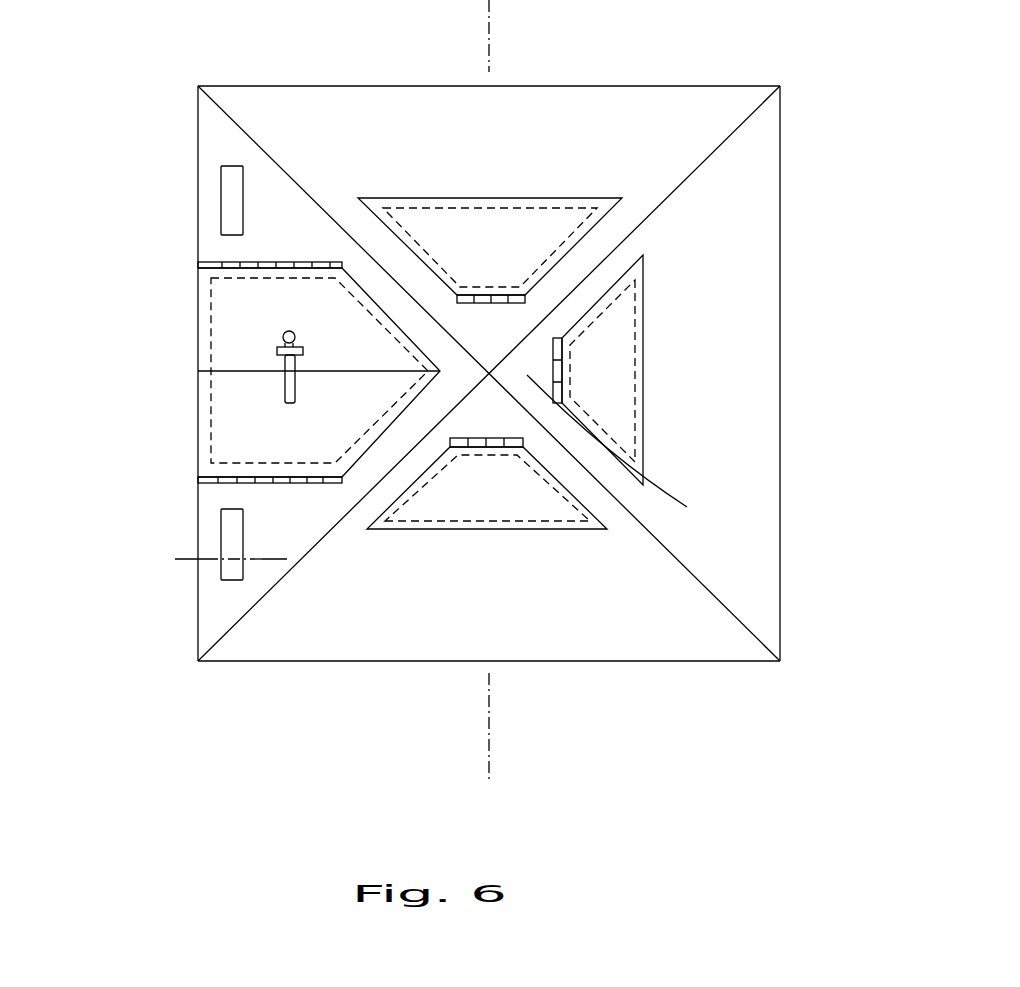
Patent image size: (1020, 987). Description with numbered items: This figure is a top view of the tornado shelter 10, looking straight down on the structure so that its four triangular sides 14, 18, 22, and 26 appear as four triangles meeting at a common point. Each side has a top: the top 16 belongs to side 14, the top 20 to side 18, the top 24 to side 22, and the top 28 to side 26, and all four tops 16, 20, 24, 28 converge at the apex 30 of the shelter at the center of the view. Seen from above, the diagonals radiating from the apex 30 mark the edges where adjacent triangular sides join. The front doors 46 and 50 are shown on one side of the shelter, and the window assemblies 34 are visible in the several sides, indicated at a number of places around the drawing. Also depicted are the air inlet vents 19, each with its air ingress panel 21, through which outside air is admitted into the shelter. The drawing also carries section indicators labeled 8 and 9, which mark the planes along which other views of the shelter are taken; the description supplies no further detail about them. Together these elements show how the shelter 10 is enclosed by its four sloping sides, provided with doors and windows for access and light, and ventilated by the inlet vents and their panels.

The section line 8- 8 is at (489, 23).
The section line 9- 9 is at (206, 517).
The shelter 10 is at (138, 197).
The triangular side 14 is at (227, 617).
The top 16 is at (478, 245).
The triangular side 18 is at (650, 638).
The air inlet vent 19 is at (164, 372).
The top 20 is at (490, 440).
The air ingress panel 21 is at (229, 206).
The triangular side 22 is at (720, 433).
The top 24 is at (626, 448).
The triangular side 26 is at (543, 97).
The top 28 is at (487, 348).
The apex 30 is at (500, 372).
The window assembly 34 is at (328, 112).
The front door 46 is at (247, 325).
The front door 50 is at (248, 425).